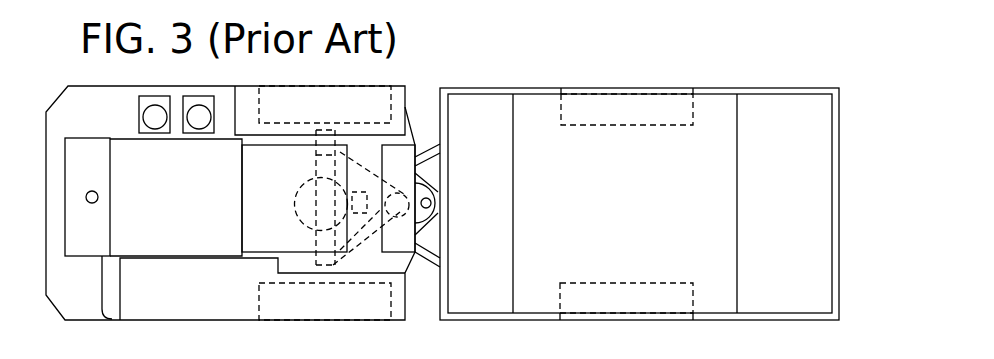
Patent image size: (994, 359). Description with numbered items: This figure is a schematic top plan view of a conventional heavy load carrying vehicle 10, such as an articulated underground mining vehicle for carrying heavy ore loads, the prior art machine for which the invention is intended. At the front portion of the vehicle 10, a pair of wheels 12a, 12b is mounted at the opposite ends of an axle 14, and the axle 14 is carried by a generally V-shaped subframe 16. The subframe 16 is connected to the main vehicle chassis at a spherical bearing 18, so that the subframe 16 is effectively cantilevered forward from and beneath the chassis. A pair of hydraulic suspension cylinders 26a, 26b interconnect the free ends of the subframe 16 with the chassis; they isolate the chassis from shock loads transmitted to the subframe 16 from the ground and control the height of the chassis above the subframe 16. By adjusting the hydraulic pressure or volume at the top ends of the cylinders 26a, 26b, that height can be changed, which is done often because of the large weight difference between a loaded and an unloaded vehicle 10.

The heavy load carrying vehicle 10 is at (647, 59).
The wheel 12a is at (310, 312).
The wheel 12b is at (297, 93).
The axle 14 is at (297, 195).
The subframe 16 is at (350, 165).
The spherical bearing 18 is at (423, 228).
The hydraulic suspension cylinder 26a is at (313, 263).
The hydraulic suspension cylinder 26b is at (315, 146).